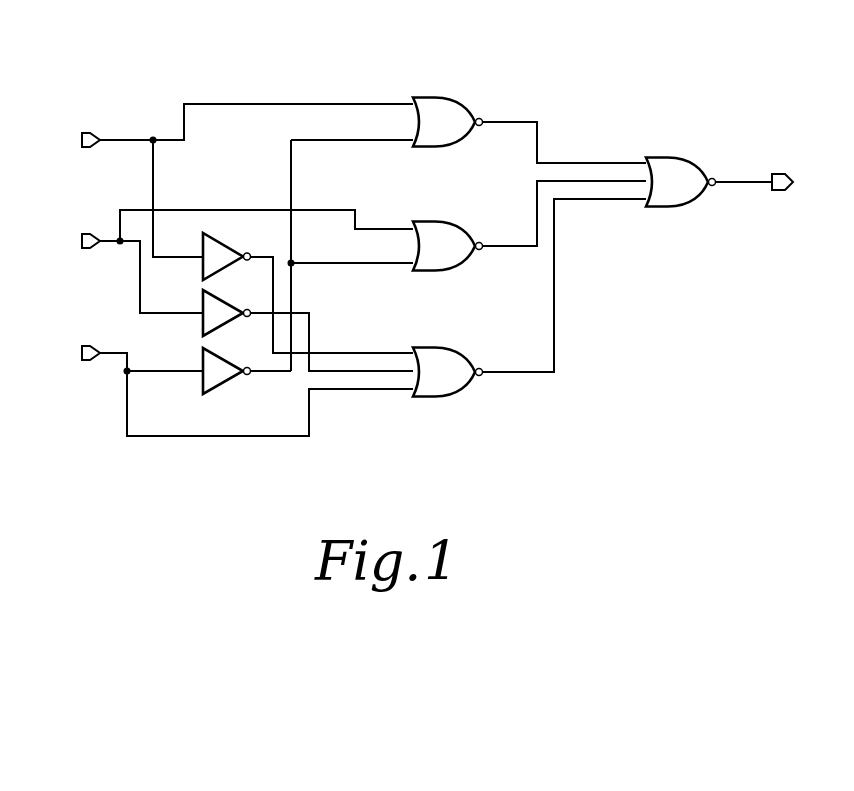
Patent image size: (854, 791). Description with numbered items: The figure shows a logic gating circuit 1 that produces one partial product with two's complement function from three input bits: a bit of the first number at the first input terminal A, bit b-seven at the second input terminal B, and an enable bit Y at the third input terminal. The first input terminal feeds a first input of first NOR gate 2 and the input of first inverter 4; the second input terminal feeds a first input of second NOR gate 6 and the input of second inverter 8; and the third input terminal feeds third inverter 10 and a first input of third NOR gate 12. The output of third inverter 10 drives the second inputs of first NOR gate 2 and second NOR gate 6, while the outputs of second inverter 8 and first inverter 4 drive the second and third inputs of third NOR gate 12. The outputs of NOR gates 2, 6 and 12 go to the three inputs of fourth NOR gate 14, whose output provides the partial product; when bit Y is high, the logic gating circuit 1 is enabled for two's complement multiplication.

The logic gating circuit 1 is at (582, 81).
The first NOR gate 2 is at (447, 98).
The first inverter 4 is at (229, 245).
The second NOR gate 6 is at (447, 222).
The second inverter 8 is at (206, 293).
The third inverter 10 is at (220, 388).
The third NOR gate 12 is at (446, 348).
The fourth NOR gate 14 is at (682, 158).